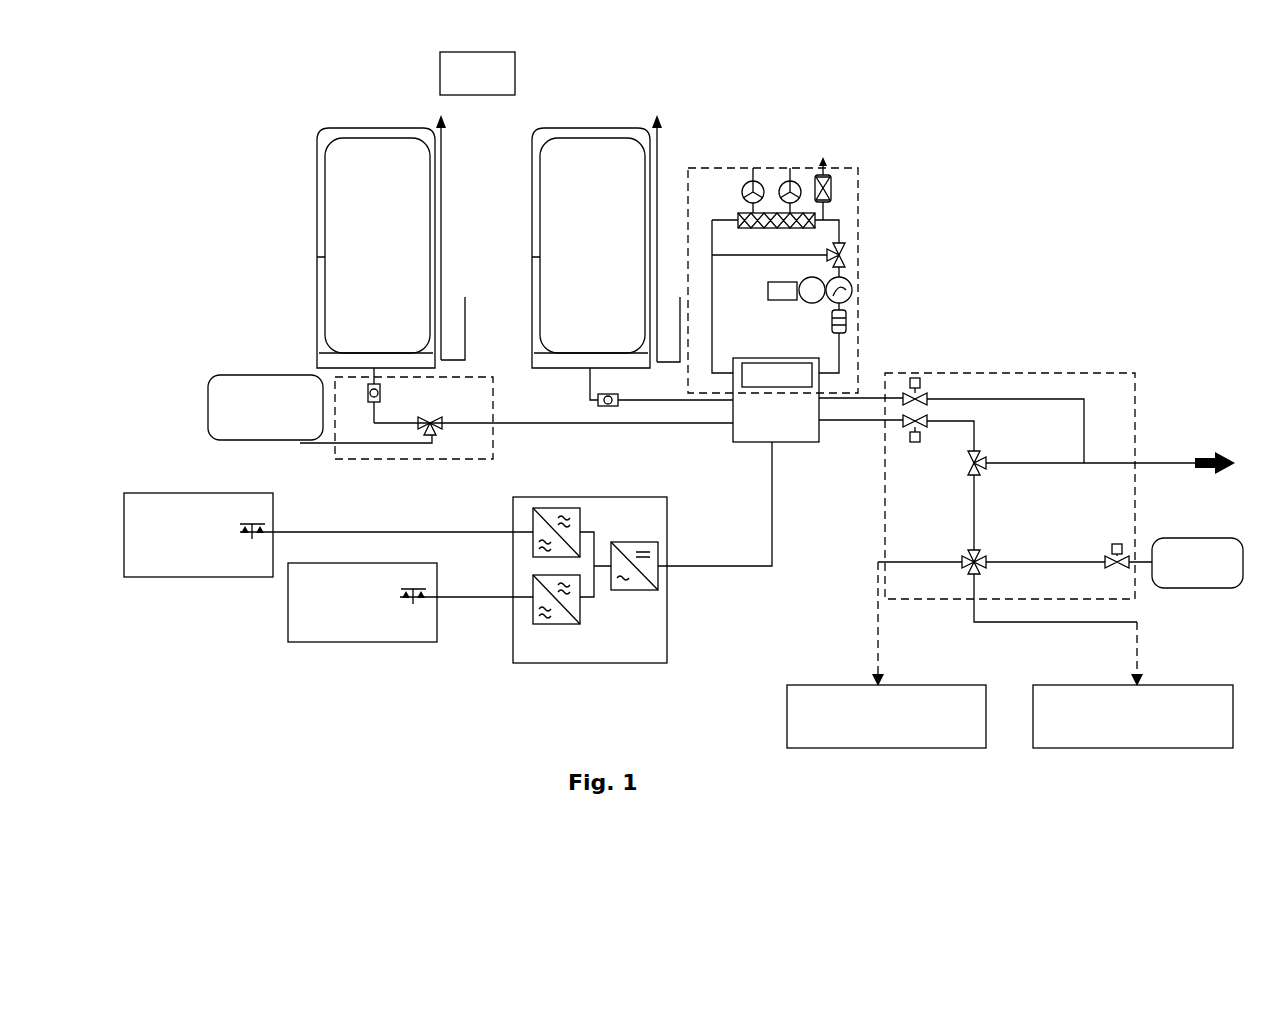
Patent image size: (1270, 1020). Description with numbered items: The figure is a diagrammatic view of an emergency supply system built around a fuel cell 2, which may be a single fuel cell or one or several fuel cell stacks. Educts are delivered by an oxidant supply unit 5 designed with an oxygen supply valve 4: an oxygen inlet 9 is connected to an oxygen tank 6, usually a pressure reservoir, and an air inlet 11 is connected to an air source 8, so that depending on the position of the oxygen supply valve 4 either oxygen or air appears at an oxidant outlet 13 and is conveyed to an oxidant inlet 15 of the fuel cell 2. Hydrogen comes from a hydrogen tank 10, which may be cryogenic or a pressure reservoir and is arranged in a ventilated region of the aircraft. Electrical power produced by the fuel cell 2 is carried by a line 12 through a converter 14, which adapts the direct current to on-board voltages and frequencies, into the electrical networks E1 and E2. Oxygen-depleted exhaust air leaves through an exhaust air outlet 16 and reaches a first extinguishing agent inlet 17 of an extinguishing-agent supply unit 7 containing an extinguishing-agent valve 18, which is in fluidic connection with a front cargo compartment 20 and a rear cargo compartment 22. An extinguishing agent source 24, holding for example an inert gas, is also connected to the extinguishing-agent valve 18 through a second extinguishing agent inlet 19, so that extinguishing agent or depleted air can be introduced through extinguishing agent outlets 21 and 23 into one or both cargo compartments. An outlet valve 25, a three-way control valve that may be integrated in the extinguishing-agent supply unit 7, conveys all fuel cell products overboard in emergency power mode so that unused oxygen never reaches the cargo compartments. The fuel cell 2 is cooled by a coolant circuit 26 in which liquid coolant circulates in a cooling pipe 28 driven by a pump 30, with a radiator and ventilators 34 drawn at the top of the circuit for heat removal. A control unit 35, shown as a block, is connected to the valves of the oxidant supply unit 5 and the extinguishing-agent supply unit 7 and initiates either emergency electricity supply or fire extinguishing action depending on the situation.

The fuel cell 2 is at (788, 443).
The oxygen supply valve 4 is at (434, 419).
The oxidant supply unit 5 is at (472, 456).
The oxygen tank 6 is at (330, 192).
The extinguishing-agent supply unit 7 is at (1105, 380).
The air source 8 is at (257, 386).
The oxygen inlet 9 is at (379, 374).
The hydrogen tank 10 is at (548, 192).
The air inlet 11 is at (335, 446).
The line 12 is at (772, 490).
The oxidant outlet 13 is at (495, 421).
The converter 14 is at (588, 648).
The oxidant inlet 15 is at (731, 427).
The exhaust air outlet 16 is at (823, 428).
The first extinguishing agent inlet 17 is at (890, 427).
The extinguishing-agent valve 18 is at (986, 550).
The second extinguishing agent inlet 19 is at (1140, 554).
The front cargo compartment 20 is at (792, 718).
The extinguishing agent outlet 21 is at (882, 559).
The rear cargo compartment 22 is at (1180, 696).
The extinguishing agent outlet 23 is at (981, 604).
The extinguishing agent source 24 is at (1190, 552).
The outlet valve 25 is at (985, 450).
The coolant circuit 26 is at (850, 184).
The cooling pipe 28 is at (842, 355).
The pump 30 is at (852, 285).
The cooling fans 34 is at (746, 185).
The control unit 35 is at (515, 70).
The electrical network E1 is at (356, 625).
The electrical network E2 is at (200, 560).